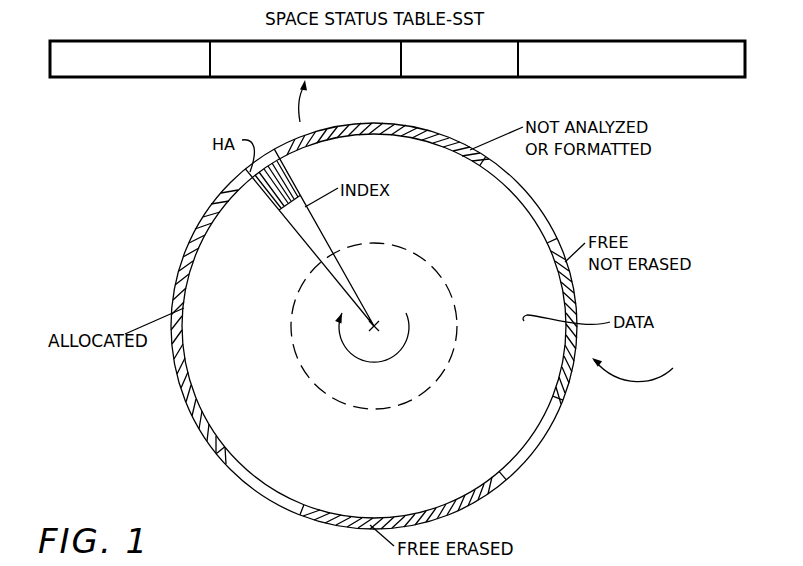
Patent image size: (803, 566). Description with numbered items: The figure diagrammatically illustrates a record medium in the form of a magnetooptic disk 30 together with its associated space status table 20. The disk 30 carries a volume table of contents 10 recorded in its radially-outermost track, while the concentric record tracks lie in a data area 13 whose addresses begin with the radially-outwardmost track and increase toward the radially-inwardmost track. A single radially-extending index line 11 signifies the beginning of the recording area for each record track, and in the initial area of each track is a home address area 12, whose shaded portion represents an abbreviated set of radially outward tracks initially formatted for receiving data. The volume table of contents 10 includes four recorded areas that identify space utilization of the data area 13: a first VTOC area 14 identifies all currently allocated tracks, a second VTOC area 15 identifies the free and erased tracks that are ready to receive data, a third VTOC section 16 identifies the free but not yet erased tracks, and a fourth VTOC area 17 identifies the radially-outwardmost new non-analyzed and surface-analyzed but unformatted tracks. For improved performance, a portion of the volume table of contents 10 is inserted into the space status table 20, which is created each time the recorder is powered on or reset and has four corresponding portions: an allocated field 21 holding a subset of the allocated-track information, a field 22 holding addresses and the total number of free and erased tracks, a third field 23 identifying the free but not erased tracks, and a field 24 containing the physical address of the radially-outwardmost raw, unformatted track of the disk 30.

The volume table of contents (VTOC) 10 is at (184, 263).
The index line 11 is at (322, 232).
The home address area (HA) 12 is at (288, 182).
The data area 13 is at (476, 428).
The first VTOC area 14 is at (182, 388).
The second VTOC area 15 is at (325, 525).
The third VTOC section 16 is at (568, 388).
The fourth VTOC area 17 is at (414, 122).
The space status table (SST) 20 is at (106, 36).
The allocated field 21 is at (192, 81).
The free and erased field 22 is at (383, 81).
The free not erased field 23 is at (473, 81).
The unformatted field 24 is at (665, 81).
The magnetooptic disk 30 is at (640, 364).